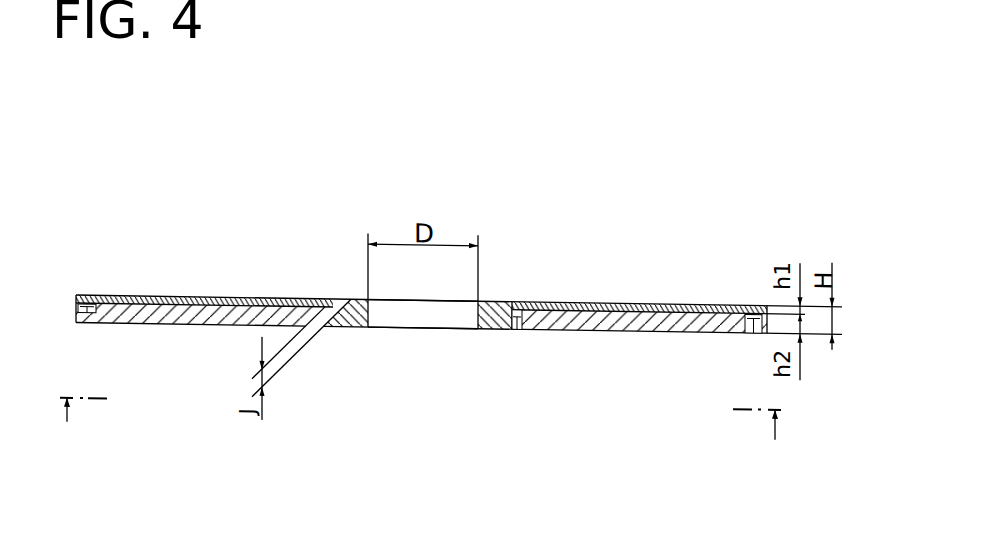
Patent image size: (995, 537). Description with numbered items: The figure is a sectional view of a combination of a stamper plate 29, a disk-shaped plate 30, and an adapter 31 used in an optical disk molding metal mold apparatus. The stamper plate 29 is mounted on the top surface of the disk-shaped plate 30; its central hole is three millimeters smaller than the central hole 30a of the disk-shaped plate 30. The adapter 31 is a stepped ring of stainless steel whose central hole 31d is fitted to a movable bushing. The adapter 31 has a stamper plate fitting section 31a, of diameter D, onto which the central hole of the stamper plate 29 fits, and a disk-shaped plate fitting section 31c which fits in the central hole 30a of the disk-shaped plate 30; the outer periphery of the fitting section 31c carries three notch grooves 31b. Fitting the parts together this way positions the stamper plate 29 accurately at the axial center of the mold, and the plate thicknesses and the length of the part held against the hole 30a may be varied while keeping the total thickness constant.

The stamper plate 29 is at (216, 295).
The disk-shaped plate 30 is at (172, 322).
The central hole of the disk-shaped plate 30a is at (325, 322).
The adapter 31 is at (486, 322).
The stamper plate fitting section 31a is at (383, 322).
The notch grooves 31b is at (524, 322).
The disk-shaped plate fitting section 31c is at (368, 322).
The central hole of the adapter 31d is at (370, 298).